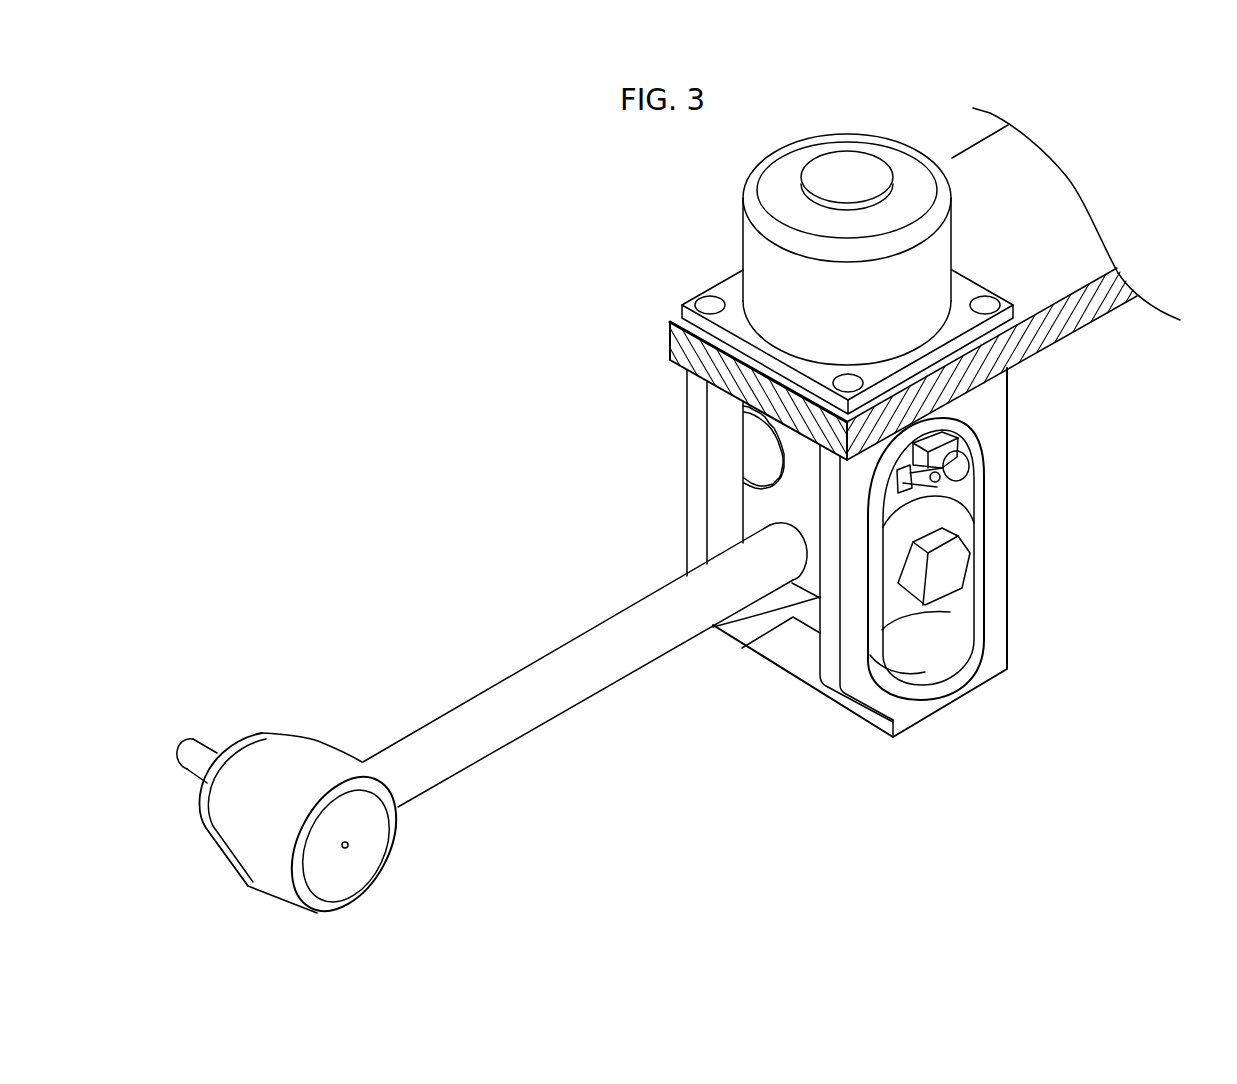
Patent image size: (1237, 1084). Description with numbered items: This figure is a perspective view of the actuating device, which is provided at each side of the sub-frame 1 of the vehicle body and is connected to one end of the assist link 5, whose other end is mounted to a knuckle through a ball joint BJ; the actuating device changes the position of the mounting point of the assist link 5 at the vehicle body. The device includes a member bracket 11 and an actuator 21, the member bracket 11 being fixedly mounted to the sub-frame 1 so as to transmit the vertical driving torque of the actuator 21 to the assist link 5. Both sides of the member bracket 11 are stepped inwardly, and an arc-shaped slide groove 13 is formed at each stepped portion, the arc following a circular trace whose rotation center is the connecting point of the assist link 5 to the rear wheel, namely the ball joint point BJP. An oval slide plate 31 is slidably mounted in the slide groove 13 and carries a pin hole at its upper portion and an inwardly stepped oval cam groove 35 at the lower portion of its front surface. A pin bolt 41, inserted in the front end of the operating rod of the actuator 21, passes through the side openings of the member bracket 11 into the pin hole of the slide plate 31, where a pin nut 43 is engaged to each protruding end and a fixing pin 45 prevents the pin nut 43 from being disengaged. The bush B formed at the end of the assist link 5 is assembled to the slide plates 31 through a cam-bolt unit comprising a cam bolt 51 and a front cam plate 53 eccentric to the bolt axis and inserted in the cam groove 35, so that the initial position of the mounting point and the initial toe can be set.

The sub-frame 1 is at (688, 276).
The actuator 21 is at (834, 147).
The member bracket 11 is at (980, 650).
The slide groove 13 is at (882, 663).
The slide plate 31 is at (981, 498).
The cam groove 35 is at (900, 623).
The pin bolt 41 is at (965, 467).
The pin nut 43 is at (947, 440).
The fixing pin 45 is at (983, 478).
The cam bolt 51 is at (957, 580).
The front cam plate 53 is at (967, 533).
The assist link 5 is at (553, 707).
The bush B is at (773, 497).
The ball joint BJ is at (320, 757).
The ball joint point BJP is at (357, 844).